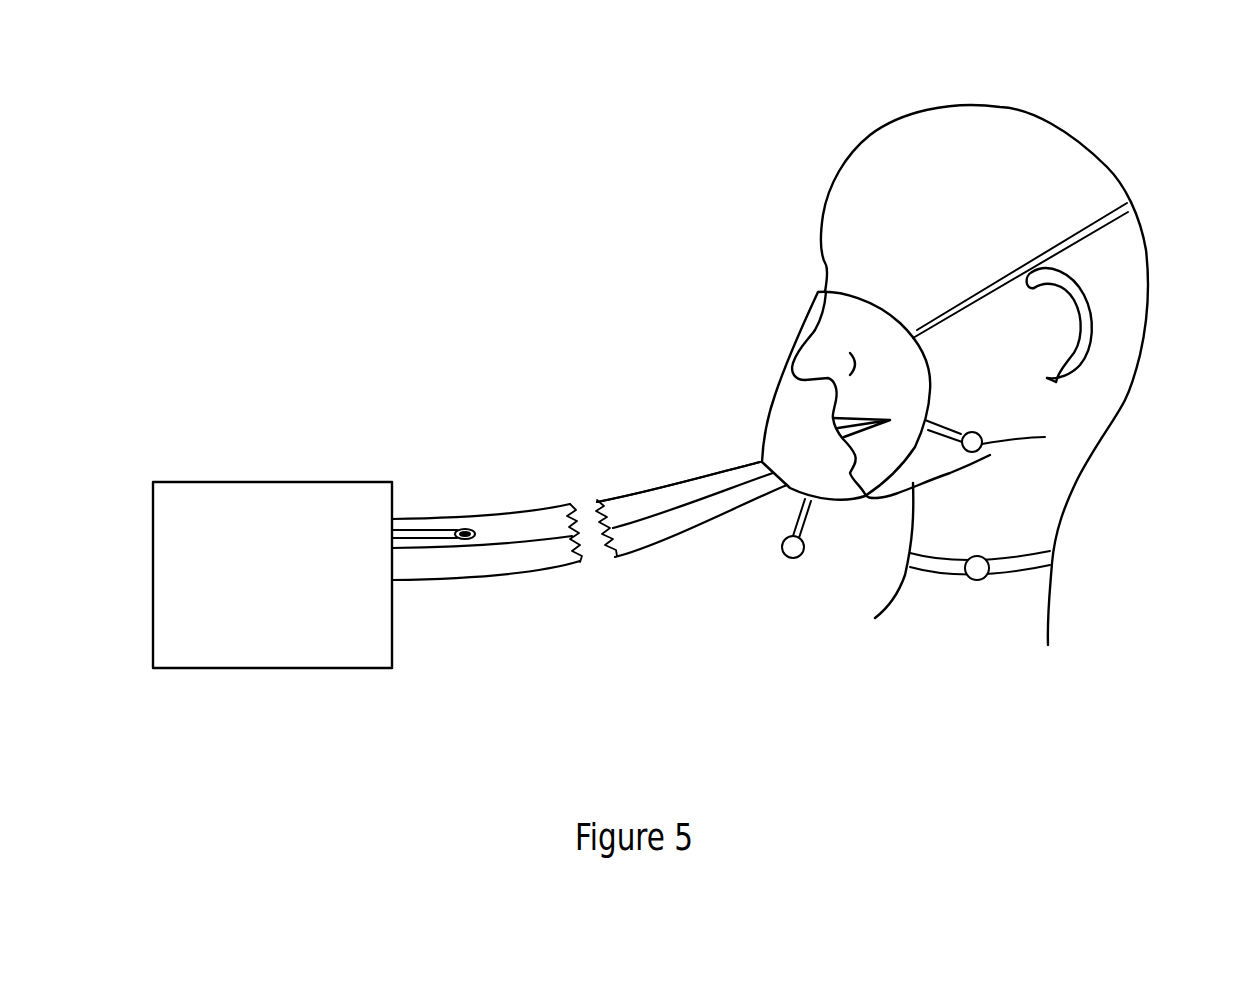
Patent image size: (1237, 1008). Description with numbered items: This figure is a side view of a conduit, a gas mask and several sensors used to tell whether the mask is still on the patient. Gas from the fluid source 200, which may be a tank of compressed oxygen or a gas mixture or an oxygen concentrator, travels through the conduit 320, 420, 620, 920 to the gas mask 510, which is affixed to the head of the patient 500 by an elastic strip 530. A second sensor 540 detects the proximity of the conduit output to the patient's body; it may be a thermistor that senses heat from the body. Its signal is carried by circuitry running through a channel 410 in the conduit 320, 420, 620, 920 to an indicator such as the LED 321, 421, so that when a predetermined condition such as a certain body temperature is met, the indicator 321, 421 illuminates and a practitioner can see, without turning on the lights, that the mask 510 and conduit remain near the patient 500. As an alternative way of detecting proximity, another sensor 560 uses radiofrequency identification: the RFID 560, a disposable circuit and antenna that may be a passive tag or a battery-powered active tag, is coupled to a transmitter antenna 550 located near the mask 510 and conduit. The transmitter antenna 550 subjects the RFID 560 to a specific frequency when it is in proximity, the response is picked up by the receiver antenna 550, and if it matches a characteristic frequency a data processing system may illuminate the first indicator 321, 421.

The fluid source 200 is at (288, 670).
The conduit 320 is at (589, 462).
The conduit 420 is at (589, 462).
The conduit 620 is at (589, 462).
The conduit 920 is at (697, 473).
The LED indicator 321 is at (397, 483).
The LED indicator 421 is at (427, 530).
The channel 410 is at (630, 512).
The patient 500 is at (1053, 120).
The gas mask 510 is at (782, 362).
The elastic strip 530 is at (1133, 203).
The second sensor 540 is at (1045, 437).
The transmitter antenna 550 is at (795, 559).
The RFID sensor 560 is at (975, 580).